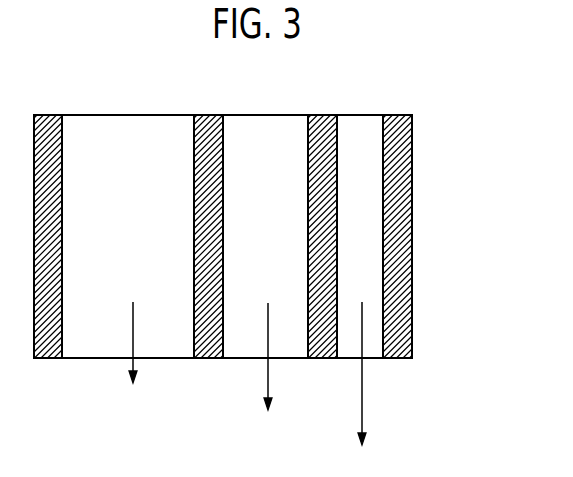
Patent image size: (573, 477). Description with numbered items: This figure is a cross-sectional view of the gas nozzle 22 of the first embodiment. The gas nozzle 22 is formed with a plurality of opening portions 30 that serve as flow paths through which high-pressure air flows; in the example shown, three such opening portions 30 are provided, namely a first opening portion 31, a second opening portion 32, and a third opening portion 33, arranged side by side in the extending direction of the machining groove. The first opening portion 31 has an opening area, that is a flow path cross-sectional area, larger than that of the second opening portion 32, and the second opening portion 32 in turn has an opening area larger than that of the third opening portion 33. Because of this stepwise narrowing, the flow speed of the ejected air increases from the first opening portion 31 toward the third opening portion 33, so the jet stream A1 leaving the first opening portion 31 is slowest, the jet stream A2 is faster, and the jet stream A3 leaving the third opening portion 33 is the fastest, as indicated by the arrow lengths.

The gas nozzle 22 is at (412, 158).
The opening portions 30 is at (235, 199).
The first opening portion 31 is at (116, 128).
The second opening portion 32 is at (252, 128).
The third opening portion 33 is at (363, 128).
The jet stream A1 is at (133, 362).
The jet stream A2 is at (268, 375).
The jet stream A3 is at (363, 389).